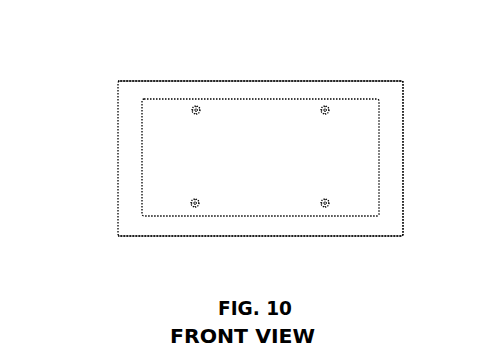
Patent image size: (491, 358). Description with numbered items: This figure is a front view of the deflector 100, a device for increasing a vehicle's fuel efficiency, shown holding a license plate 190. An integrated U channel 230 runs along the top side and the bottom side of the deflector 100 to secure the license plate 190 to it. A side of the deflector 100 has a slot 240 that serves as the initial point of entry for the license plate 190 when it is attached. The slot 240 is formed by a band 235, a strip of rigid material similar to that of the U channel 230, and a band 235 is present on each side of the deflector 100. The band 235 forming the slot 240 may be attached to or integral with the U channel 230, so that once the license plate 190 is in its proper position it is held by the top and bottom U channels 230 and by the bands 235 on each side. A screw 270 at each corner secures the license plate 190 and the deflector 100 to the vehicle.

The deflector 100 is at (292, 89).
The license plate 190 is at (268, 199).
The U channel 230 is at (157, 88).
The band 235 is at (133, 165).
The slot 240 is at (403, 152).
The screw 270 is at (195, 105).